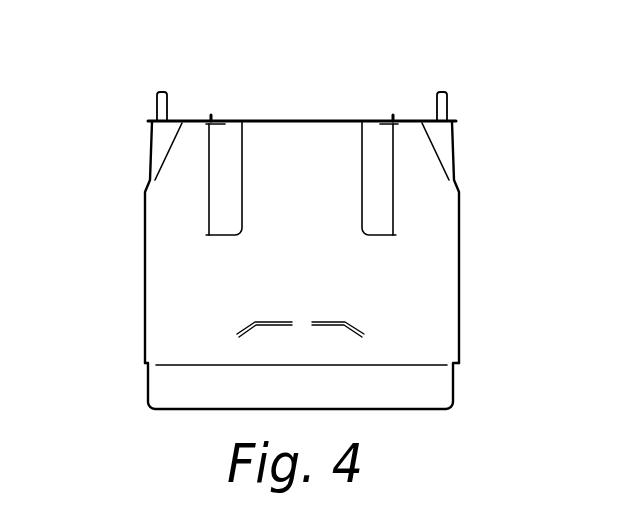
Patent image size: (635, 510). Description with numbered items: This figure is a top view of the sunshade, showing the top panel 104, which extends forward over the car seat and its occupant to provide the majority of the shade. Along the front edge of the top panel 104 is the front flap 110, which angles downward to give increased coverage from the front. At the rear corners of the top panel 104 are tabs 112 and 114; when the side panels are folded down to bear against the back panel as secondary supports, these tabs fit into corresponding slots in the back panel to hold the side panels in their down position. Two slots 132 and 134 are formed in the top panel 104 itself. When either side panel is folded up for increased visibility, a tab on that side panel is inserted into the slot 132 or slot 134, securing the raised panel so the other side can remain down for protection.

The top panel 104 is at (437, 264).
The front flap 110 is at (428, 413).
The tab 112 is at (162, 88).
The tab 114 is at (448, 90).
The slot 132 is at (236, 333).
The slot 134 is at (377, 330).